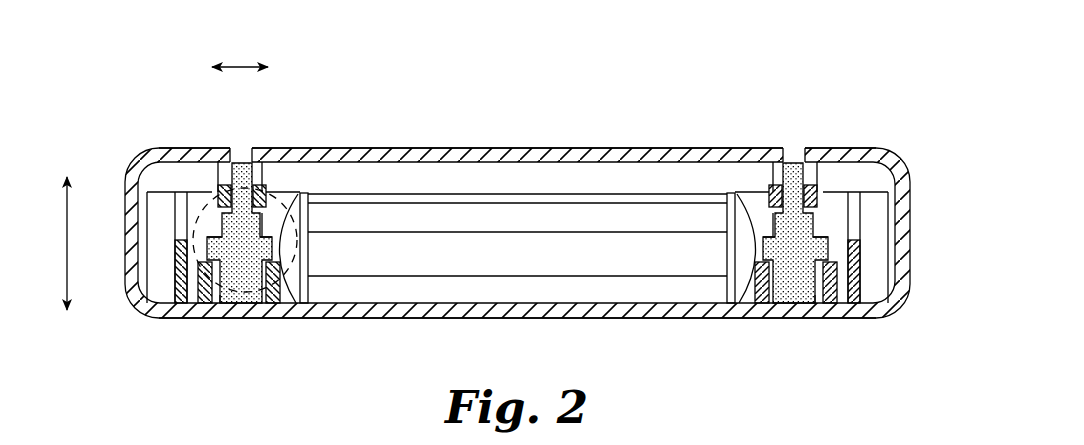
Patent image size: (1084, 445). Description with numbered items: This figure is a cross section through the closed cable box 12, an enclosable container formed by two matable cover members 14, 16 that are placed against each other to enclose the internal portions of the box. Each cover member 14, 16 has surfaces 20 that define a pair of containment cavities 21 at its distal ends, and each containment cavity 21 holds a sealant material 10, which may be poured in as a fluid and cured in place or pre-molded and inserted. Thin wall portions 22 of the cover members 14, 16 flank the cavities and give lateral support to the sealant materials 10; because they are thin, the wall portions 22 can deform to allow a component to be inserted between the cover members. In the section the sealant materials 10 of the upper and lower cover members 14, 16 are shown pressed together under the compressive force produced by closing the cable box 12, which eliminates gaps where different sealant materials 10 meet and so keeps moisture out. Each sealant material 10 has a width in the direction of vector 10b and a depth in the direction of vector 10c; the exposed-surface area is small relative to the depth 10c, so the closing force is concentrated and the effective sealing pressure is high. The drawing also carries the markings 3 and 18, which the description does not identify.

The detail region shown in FIG. 3 is at (207, 203).
The sealant material 10 is at (240, 165).
The width vector 10b is at (242, 65).
The depth vector 10c is at (67, 212).
The cable box 12 is at (760, 58).
The cover member 14 is at (503, 173).
The cover member 16 is at (490, 292).
The central tube and end structures 18 is at (517, 225).
The surfaces 20 is at (222, 186).
The containment cavity 21 is at (270, 212).
The wall portion 22 is at (205, 246).